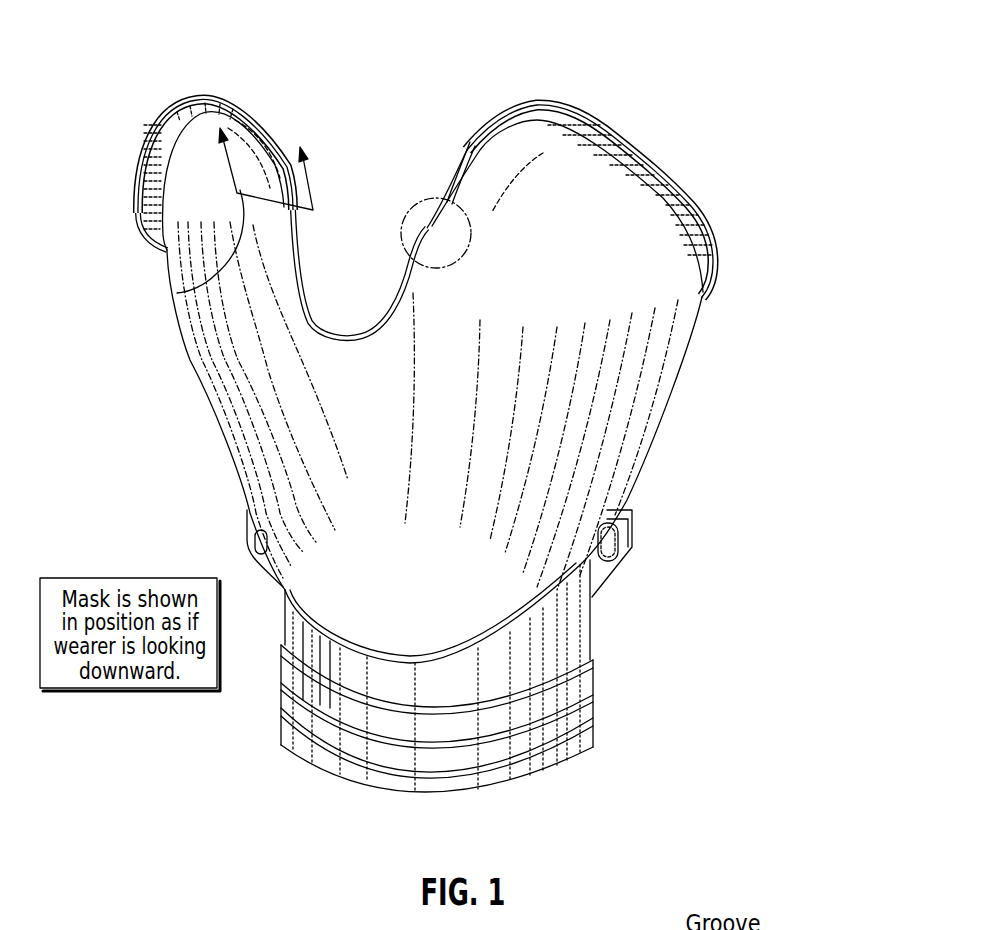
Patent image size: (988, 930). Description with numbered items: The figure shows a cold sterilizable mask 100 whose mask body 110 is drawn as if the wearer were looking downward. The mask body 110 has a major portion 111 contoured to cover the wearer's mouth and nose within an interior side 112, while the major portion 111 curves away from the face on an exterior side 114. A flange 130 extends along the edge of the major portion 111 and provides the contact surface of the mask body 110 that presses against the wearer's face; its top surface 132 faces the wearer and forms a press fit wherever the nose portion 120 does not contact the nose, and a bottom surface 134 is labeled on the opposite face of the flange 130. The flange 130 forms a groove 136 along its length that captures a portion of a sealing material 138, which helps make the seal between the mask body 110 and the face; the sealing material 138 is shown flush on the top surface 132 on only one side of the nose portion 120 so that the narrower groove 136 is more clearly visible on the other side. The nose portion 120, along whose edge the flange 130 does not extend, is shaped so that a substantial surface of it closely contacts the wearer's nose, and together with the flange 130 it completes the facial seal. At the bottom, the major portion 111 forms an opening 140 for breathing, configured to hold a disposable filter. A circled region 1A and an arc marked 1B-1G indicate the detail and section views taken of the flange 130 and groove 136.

The mask 100 is at (740, 33).
The mask body 110 is at (200, 474).
The major portion 111 is at (617, 463).
The interior side 112 is at (663, 167).
The exterior side 114 is at (690, 383).
The nose portion 120 is at (343, 360).
The flange 130 is at (380, 150).
The top surface 132 is at (404, 161).
The bottom surface 134 is at (160, 225).
The groove 136 is at (466, 142).
The sealing material 138 is at (203, 100).
The opening 140 is at (305, 780).
The detail view 1A indicator 1A is at (402, 233).
The section views 1B-1G indicator 1B-1G is at (177, 293).